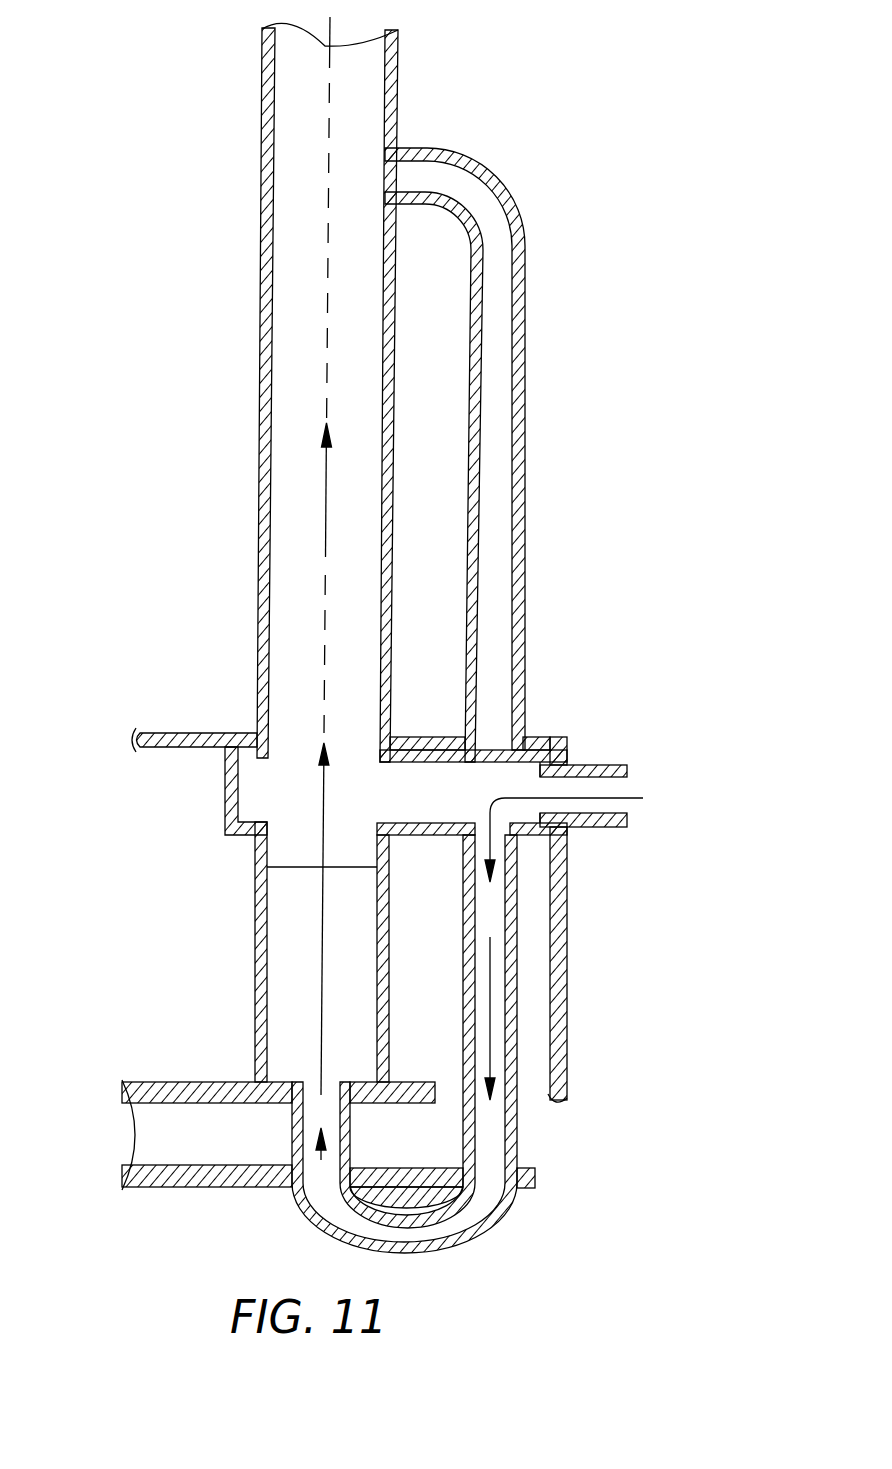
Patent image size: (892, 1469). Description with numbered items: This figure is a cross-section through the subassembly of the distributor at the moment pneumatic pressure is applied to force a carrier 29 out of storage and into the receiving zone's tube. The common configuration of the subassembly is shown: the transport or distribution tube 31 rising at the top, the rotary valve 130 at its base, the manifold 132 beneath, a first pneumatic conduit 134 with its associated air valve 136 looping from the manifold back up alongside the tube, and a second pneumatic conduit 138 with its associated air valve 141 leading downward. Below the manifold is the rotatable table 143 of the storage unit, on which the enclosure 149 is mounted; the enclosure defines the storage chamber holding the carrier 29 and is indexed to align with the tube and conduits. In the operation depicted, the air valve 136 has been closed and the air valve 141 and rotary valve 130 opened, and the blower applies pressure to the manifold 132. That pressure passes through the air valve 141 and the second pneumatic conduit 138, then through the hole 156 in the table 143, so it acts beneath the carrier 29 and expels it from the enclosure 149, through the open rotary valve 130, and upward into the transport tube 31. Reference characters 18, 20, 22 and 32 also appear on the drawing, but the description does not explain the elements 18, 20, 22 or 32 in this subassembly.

The outer return tube 18 is at (497, 360).
The upper mounting plate 20 is at (270, 748).
The manifold chamber 22 is at (493, 777).
The carrier 29 is at (290, 862).
The transport tube 31 is at (398, 80).
The riser tube 32 is at (303, 357).
The rotary valve 130 is at (308, 732).
The manifold 132 is at (437, 838).
The first pneumatic conduit 134 is at (524, 272).
The air valve 136 is at (498, 752).
The second pneumatic conduit 138 is at (517, 1003).
The air valve 141 is at (500, 827).
The table 143 is at (187, 1082).
The enclosure 149 is at (254, 908).
The hole 156 is at (308, 1082).